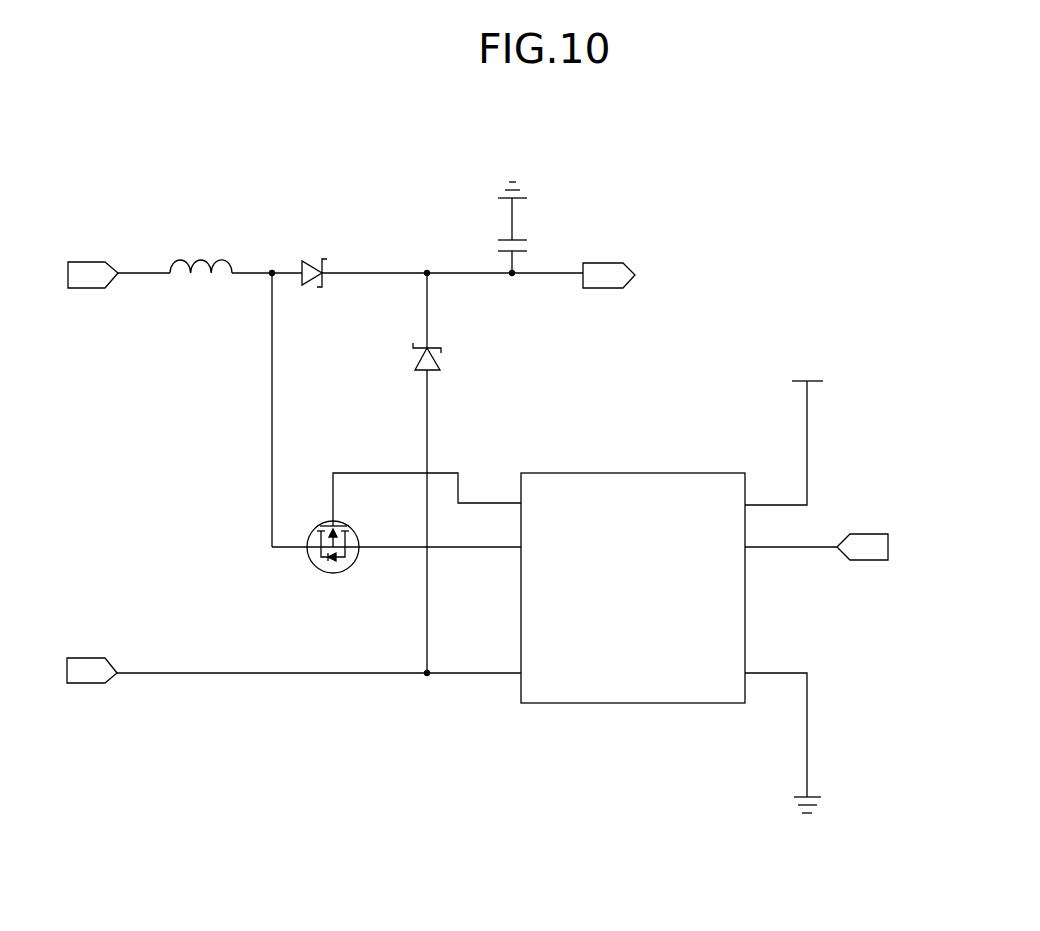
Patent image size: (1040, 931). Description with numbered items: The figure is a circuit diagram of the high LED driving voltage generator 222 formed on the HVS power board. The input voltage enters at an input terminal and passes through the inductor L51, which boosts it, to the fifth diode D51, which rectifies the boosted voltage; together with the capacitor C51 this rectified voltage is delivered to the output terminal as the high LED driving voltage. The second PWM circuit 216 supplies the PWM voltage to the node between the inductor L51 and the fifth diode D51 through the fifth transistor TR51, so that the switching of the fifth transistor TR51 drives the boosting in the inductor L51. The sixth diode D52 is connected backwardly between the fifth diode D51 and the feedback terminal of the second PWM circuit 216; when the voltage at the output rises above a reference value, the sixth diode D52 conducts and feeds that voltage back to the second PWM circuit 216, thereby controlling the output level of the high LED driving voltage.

The high LED driving voltage generator 222 is at (1032, 176).
The inductor L51 is at (201, 255).
The fifth diode D51 is at (312, 259).
The capacitor C51 is at (489, 227).
The sixth diode D52 is at (449, 473).
The fifth transistor TR51 is at (333, 573).
The second PWM circuit 216 is at (634, 703).